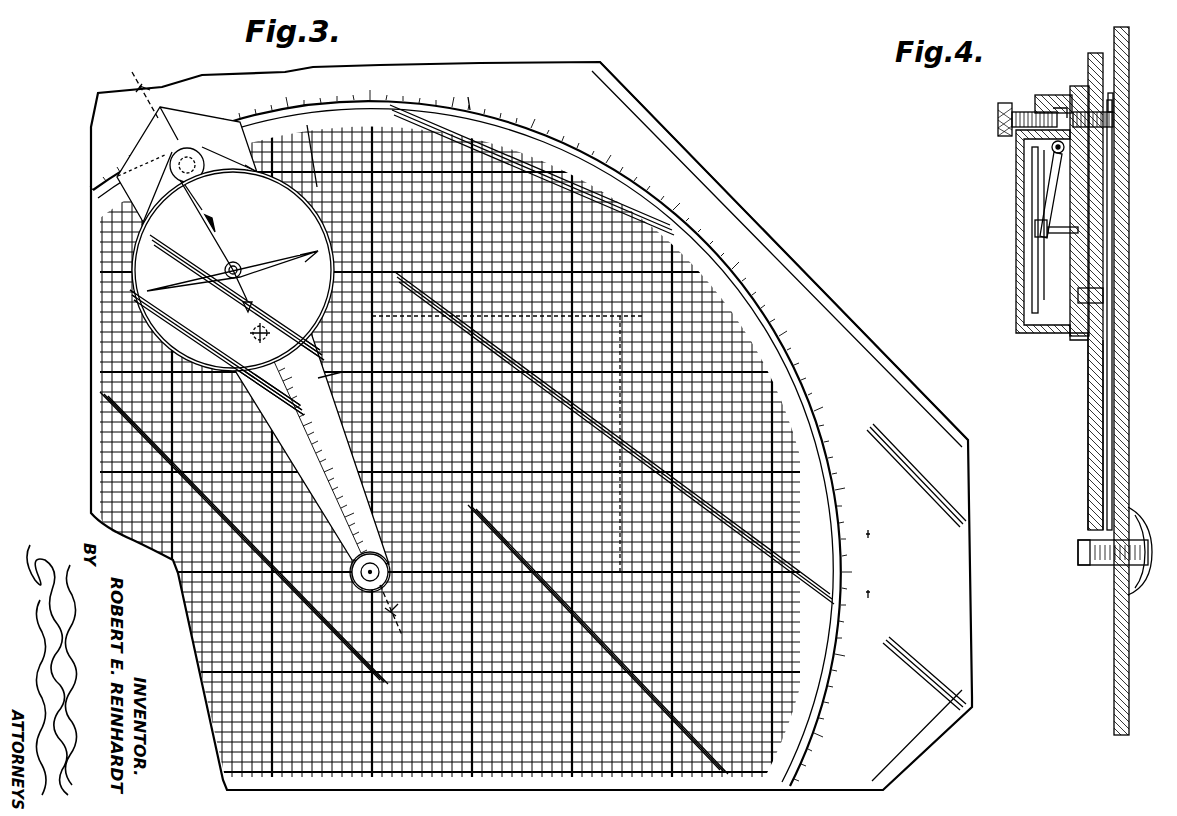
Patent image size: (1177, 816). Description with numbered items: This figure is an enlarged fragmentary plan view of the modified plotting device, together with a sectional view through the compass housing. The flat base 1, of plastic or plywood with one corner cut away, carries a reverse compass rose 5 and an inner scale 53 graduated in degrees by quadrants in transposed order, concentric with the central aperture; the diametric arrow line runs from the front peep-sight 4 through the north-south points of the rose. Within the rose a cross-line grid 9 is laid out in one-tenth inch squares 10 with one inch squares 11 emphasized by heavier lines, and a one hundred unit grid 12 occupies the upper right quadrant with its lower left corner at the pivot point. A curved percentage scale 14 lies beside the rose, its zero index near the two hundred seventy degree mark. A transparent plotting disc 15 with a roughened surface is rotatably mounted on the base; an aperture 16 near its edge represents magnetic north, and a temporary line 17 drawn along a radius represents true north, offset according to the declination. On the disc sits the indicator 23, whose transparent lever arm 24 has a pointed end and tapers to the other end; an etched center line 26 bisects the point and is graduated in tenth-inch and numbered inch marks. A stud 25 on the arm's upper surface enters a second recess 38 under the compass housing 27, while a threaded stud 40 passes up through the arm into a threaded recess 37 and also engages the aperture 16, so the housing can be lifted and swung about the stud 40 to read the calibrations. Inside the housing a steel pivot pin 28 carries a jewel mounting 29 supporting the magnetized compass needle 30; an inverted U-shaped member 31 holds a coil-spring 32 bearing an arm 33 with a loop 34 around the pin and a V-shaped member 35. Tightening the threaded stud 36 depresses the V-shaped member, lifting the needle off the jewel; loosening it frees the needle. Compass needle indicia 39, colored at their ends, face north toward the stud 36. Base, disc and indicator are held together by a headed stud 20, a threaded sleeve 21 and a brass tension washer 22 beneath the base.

In FIG. 3, the base 1 is at (905, 412).
In FIG. 4, the base 1 is at (1122, 365).
In FIG. 3, the front peep-sight 4 is at (265, 360).
In FIG. 3, the reverse compass rose 5 is at (632, 154).
In FIG. 3, the cross-line grid 9 is at (710, 304).
In FIG. 3, the one-tenth inch squares 10 is at (687, 255).
In FIG. 3, the one inch squares 11 is at (259, 586).
In FIG. 3, the 100 unit grid 12 is at (520, 294).
In FIG. 3, the curved percentage scale 14 is at (884, 404).
In FIG. 3, the transparent plotting disc 15 is at (578, 145).
In FIG. 4, the transparent plotting disc 15 is at (1116, 316).
In FIG. 4, the aperture 16 is at (1120, 100).
In FIG. 3, the temporary line 17 is at (310, 131).
In FIG. 4, the headed stud 20 is at (1080, 560).
In FIG. 3, the threaded sleeve 21 is at (388, 566).
In FIG. 4, the threaded sleeve 21 is at (1078, 552).
In FIG. 4, the brass tension washer 22 is at (1143, 525).
In FIG. 3, the indicator 23 is at (239, 415).
In FIG. 4, the indicator 23 is at (1082, 368).
In FIG. 3, the lever arm 24 is at (275, 430).
In FIG. 4, the lever arm 24 is at (1094, 478).
In FIG. 3, the stud 25 is at (268, 332).
In FIG. 4, the stud 25 is at (1100, 295).
In FIG. 3, the center line 26 is at (330, 382).
In FIG. 3, the compass housing 27 is at (322, 228).
In FIG. 4, the compass housing 27 is at (1016, 297).
In FIG. 4, the pivot pin 28 is at (1095, 218).
In FIG. 3, the jewel mounting 29 is at (238, 286).
In FIG. 4, the jewel mounting 29 is at (1035, 224).
In FIG. 3, the compass needle 30 is at (268, 274).
In FIG. 4, the compass needle 30 is at (1032, 190).
In FIG. 4, the inverted U-shaped member 31 is at (1065, 149).
In FIG. 3, the coil-spring 32 is at (192, 212).
In FIG. 4, the coil-spring 32 is at (1058, 160).
In FIG. 3, the arm 33 is at (226, 238).
In FIG. 4, the arm 33 is at (1042, 160).
In FIG. 4, the loop 34 is at (1055, 235).
In FIG. 4, the V-shaped member 35 is at (1100, 133).
In FIG. 3, the threaded stud 36 is at (148, 137).
In FIG. 4, the threaded stud 36 is at (1020, 104).
In FIG. 4, the threaded recess 37 is at (1078, 95).
In FIG. 4, the second recess 38 is at (1078, 333).
In FIG. 3, the compass needle indicia 39 is at (224, 262).
In FIG. 4, the threaded stud 40 is at (1095, 112).
In FIG. 3, the inner scale 53 is at (472, 100).